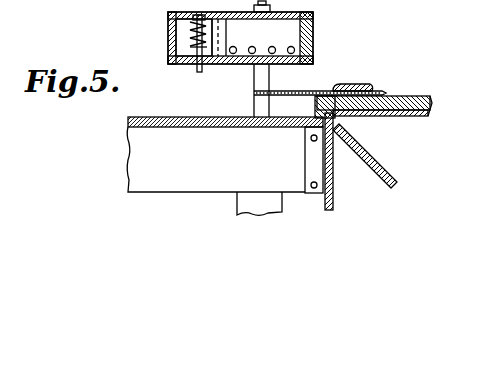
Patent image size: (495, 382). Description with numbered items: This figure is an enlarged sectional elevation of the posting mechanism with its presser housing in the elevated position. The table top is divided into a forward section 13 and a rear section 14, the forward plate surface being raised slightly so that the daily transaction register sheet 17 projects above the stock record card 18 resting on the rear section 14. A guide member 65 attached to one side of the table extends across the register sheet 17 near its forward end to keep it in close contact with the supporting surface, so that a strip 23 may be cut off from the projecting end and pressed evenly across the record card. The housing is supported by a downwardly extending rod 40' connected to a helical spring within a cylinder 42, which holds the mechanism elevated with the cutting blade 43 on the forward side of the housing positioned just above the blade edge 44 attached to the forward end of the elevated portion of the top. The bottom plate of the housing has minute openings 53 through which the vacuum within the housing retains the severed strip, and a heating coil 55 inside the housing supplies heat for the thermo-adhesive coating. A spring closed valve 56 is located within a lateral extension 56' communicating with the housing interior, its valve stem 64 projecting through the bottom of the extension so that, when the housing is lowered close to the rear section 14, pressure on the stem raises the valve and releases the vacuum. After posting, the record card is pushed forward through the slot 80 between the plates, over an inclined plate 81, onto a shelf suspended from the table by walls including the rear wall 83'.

The minute openings 53 is at (229, 64).
The cutting blade 43 is at (310, 66).
The heating coil 55 is at (258, 41).
The spring closed valve 56 is at (168, 36).
The lateral extension 56' is at (159, 37).
The valve stem 64 is at (197, 70).
The downwardly extending rod 40' is at (240, 90).
The strip 23 is at (296, 117).
The stock record card 18 is at (175, 105).
The rear section 14 is at (127, 124).
The cylinder 42 is at (236, 206).
The blade edge 44 is at (306, 129).
The rear wall 83' is at (350, 166).
The inclined plate 81 is at (383, 168).
The slot 80 is at (333, 120).
The daily transaction register sheet 17 is at (410, 97).
The guide member 65 is at (373, 89).
The forward section 13 is at (434, 103).